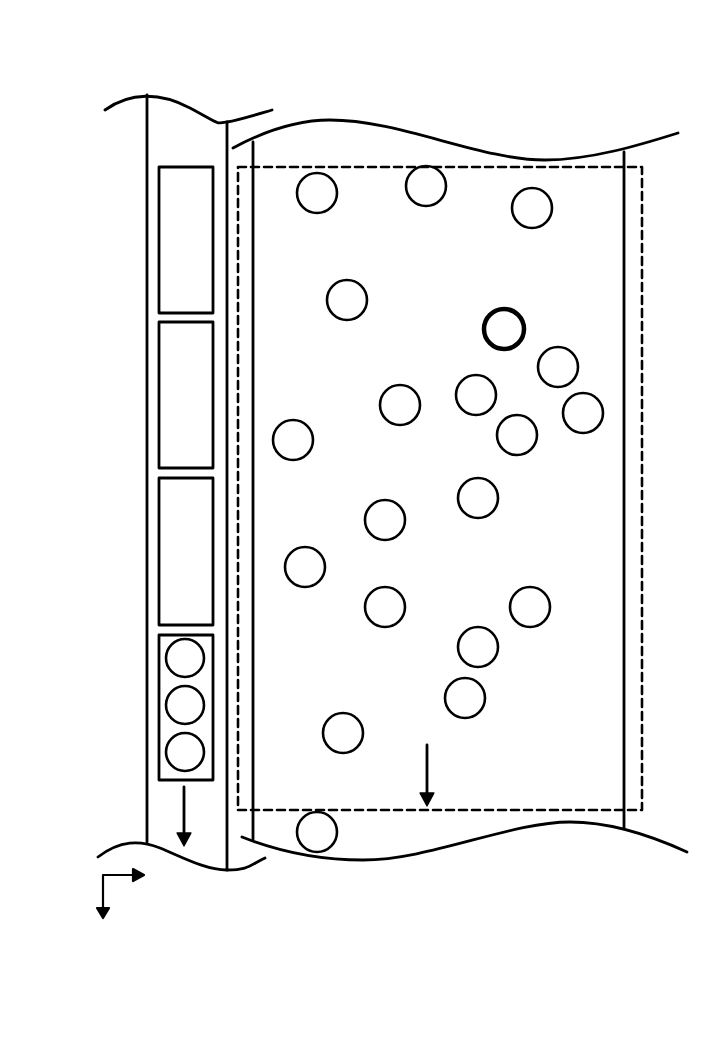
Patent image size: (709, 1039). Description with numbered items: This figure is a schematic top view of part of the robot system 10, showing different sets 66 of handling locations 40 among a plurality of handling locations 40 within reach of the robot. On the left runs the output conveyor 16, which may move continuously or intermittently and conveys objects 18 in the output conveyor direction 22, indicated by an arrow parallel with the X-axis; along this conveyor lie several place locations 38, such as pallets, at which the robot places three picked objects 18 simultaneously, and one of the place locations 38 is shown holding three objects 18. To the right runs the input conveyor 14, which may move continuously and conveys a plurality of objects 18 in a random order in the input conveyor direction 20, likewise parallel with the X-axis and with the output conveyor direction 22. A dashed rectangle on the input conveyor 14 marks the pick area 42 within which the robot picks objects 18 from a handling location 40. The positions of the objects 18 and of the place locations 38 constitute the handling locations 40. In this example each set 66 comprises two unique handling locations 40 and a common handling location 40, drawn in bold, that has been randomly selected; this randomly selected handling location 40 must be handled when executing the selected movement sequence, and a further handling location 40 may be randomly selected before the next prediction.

The robot system 10 is at (146, 72).
The input conveyor 14 is at (343, 143).
The output conveyor 16 is at (165, 146).
The object 18 is at (172, 668).
The input conveyor direction 20 is at (432, 775).
The output conveyor direction 22 is at (180, 812).
The place location 38 is at (172, 253).
The handling location 40 is at (552, 206).
The pick area 42 is at (632, 212).
The set of handling locations 66 is at (538, 228).